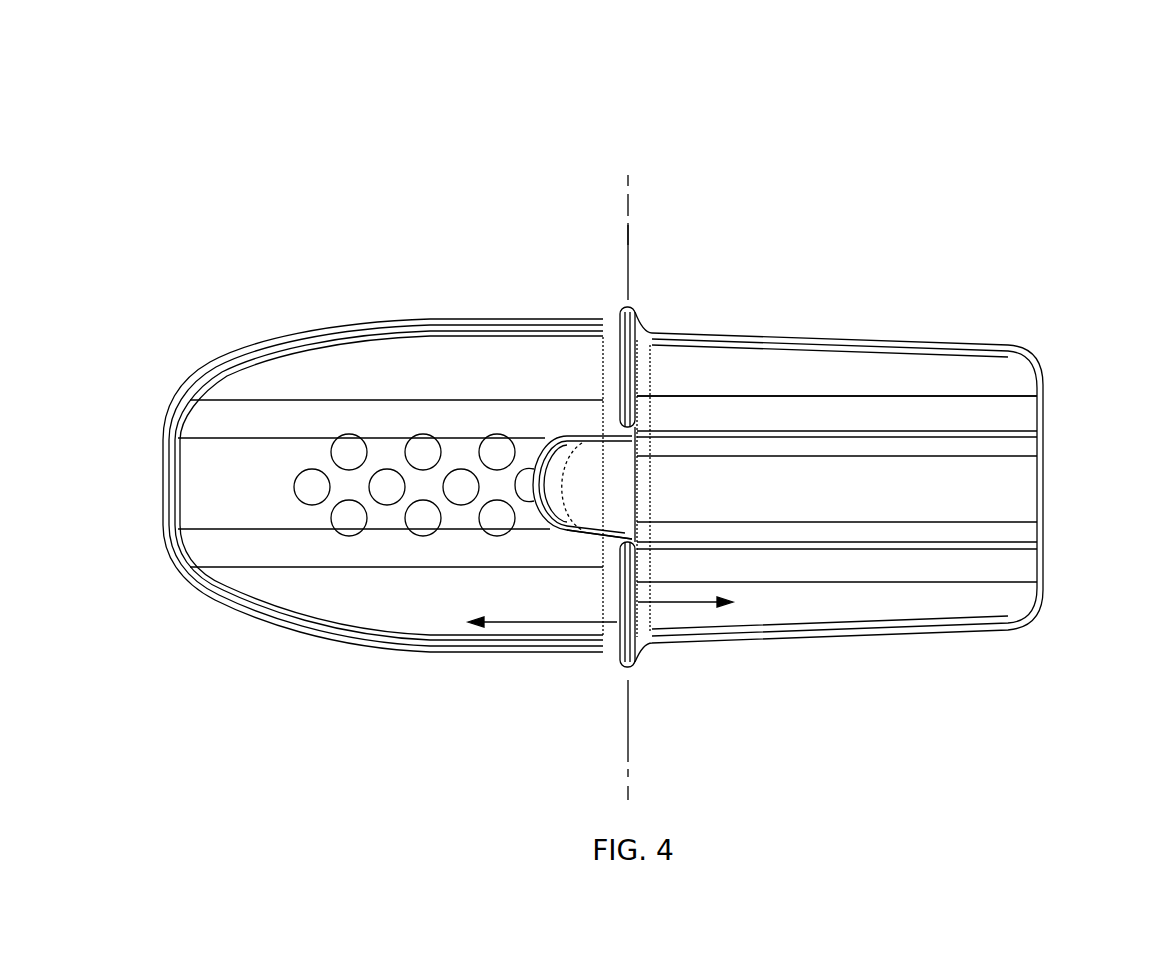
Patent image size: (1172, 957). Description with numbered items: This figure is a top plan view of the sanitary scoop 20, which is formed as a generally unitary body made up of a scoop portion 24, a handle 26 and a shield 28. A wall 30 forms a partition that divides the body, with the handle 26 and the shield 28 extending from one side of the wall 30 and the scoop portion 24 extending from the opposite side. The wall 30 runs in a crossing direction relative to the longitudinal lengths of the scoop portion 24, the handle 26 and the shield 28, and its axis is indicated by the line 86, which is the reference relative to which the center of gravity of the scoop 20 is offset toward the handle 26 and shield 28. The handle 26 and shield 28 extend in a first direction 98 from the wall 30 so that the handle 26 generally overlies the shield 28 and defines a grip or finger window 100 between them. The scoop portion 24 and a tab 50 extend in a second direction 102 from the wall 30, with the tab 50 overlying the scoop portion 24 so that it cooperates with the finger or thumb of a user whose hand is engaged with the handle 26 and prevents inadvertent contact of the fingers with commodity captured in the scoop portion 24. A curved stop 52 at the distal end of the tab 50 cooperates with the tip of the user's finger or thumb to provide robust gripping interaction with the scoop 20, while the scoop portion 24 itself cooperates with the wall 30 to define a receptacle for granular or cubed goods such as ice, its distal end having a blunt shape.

The scoop 20 is at (662, 157).
The scoop portion 24 is at (423, 350).
The handle 26 is at (993, 488).
The shield 28 is at (840, 367).
The wall 30 is at (635, 308).
The tab 50 is at (588, 505).
The stop 52 is at (553, 436).
The axis of wall 86 is at (629, 233).
The first direction 98 is at (683, 604).
The finger window 100 is at (995, 409).
The second direction 102 is at (557, 623).